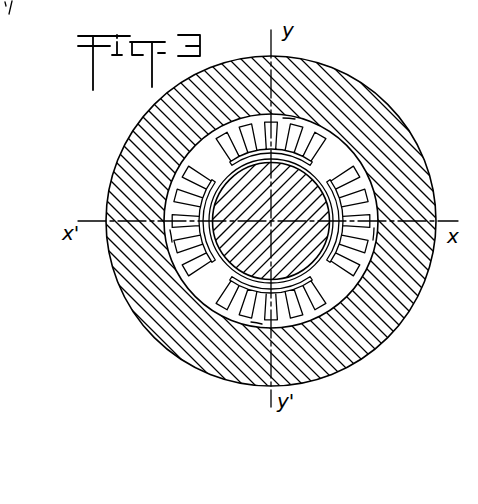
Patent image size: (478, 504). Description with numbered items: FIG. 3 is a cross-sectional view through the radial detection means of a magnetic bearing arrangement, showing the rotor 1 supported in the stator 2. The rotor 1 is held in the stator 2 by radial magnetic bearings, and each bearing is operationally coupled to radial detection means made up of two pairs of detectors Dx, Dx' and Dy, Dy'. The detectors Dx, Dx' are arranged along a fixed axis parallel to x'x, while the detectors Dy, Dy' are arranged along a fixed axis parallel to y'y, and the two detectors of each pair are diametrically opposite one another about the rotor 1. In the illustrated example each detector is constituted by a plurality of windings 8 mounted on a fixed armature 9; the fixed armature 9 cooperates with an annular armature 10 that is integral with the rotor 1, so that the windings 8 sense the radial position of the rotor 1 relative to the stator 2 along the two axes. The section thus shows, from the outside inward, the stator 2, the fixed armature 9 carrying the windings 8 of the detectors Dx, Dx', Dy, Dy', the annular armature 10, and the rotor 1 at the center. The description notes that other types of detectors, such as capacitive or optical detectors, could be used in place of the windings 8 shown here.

The rotor 1 is at (305, 243).
The stator 2 is at (407, 168).
The windings 8 is at (230, 138).
The fixed armature 9 is at (340, 147).
The annular armature 10 is at (218, 275).
The detector Dy is at (322, 78).
The detector Dx is at (414, 262).
The detector Dx' is at (117, 256).
The detector Dy' is at (216, 361).